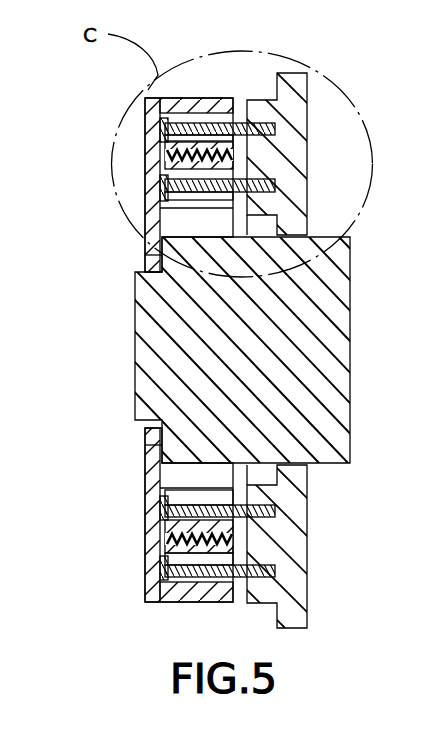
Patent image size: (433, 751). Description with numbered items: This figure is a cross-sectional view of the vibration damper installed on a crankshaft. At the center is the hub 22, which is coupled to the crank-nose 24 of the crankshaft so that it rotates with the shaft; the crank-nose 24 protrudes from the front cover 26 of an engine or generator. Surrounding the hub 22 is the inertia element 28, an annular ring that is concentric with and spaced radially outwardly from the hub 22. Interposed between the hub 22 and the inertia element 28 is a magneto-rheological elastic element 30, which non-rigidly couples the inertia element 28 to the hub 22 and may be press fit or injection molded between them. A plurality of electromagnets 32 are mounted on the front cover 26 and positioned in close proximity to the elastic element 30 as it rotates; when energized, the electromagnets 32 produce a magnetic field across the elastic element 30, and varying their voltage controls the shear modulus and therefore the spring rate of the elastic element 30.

The hub 22 is at (143, 478).
The crank-nose 24 is at (143, 345).
The front cover 26 is at (285, 165).
The inertia element 28 is at (186, 110).
The magneto-rheological elastic element 30 is at (167, 154).
The electromagnets 32 is at (165, 121).